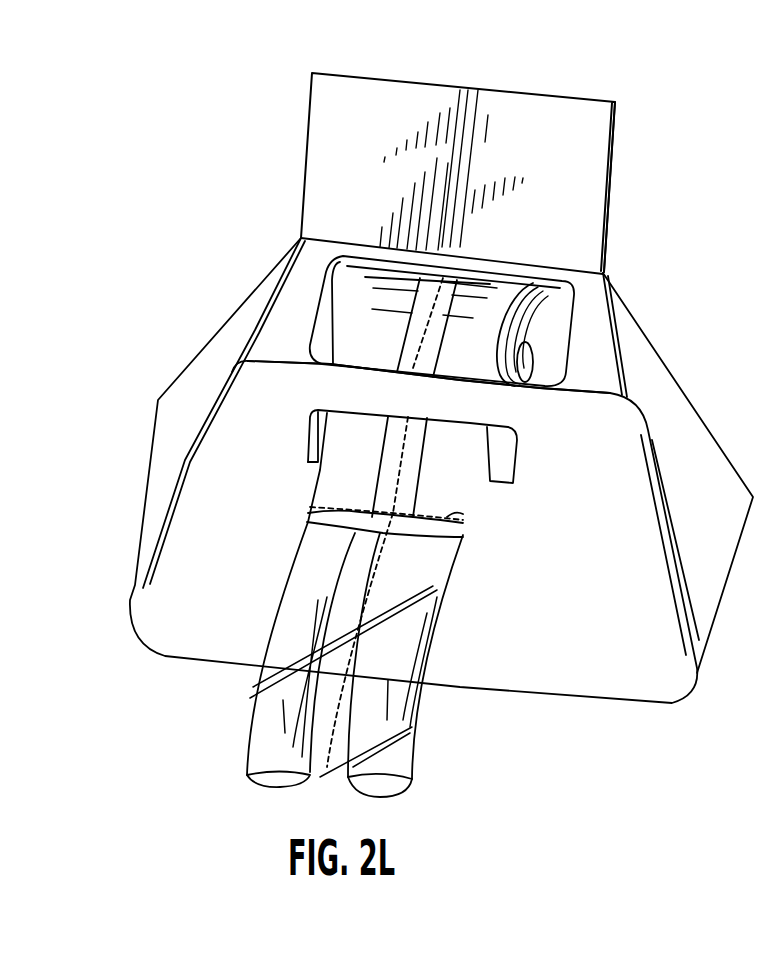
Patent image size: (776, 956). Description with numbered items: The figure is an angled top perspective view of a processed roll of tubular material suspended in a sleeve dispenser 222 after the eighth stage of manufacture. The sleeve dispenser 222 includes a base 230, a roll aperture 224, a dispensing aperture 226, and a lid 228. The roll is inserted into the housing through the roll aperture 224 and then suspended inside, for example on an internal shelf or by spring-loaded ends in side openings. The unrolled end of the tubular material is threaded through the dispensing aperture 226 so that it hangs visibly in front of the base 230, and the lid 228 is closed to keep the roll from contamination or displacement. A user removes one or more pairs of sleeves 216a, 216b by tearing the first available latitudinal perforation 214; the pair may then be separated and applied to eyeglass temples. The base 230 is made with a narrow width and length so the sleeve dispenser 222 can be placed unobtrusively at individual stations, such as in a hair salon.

The sleeve dispenser 222 is at (498, 62).
The roll aperture 224 is at (330, 285).
The dispensing aperture 226 is at (314, 434).
The lid 228 is at (595, 212).
The base 230 is at (138, 542).
The latitudinal perforation 214 is at (470, 516).
The sleeve 216a is at (423, 618).
The sleeve 216b is at (273, 620).